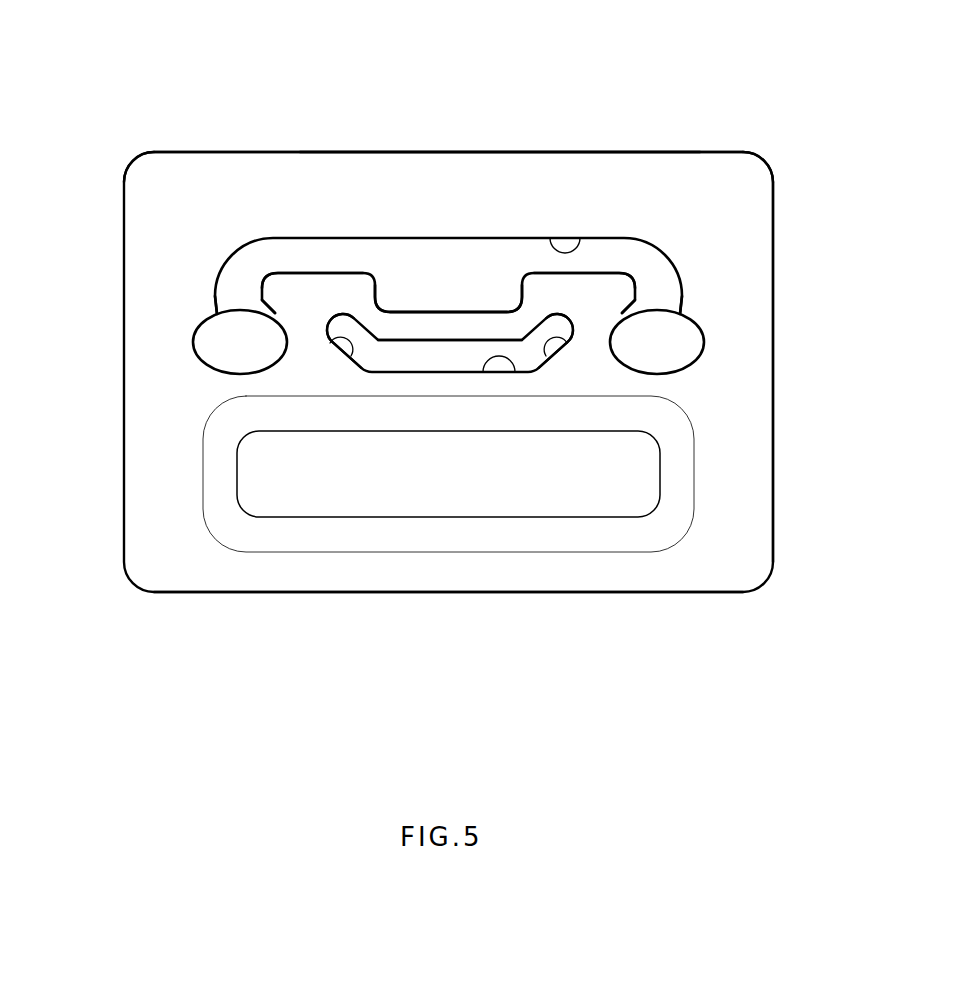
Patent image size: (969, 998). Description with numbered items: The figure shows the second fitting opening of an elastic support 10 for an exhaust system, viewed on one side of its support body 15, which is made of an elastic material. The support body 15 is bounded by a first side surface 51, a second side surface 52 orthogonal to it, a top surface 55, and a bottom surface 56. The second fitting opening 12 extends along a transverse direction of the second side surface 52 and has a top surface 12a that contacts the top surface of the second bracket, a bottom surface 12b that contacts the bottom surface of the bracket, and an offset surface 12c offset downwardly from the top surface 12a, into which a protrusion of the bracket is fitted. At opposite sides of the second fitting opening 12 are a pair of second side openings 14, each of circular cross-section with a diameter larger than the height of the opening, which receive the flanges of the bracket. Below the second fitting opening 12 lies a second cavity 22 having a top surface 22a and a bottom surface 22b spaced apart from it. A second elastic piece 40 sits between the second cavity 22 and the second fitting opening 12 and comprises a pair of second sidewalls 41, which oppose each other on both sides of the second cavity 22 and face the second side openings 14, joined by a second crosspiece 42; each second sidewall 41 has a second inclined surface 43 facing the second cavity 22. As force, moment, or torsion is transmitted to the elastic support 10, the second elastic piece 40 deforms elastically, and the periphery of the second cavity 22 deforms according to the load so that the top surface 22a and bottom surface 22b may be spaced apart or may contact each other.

The elastic support 10 is at (96, 34).
The support body 15 is at (192, 152).
The top surface 55 is at (675, 150).
The second side surface 52 is at (124, 214).
The first side surface 51 is at (773, 253).
The bottom surface 56 is at (635, 593).
The second crosspiece 42 is at (421, 309).
The second fitting opening 12 is at (380, 268).
The bottom surface 12b is at (325, 272).
The offset surface 12c is at (455, 309).
The second elastic piece 40 is at (503, 309).
The top surface 12a is at (578, 251).
The second side opening 14 is at (241, 354).
The second sidewall 41 is at (307, 332).
The second cavity 22 is at (452, 351).
The top surface 22a is at (381, 341).
The bottom surface 22b is at (500, 373).
The second inclined surface 43 is at (330, 340).